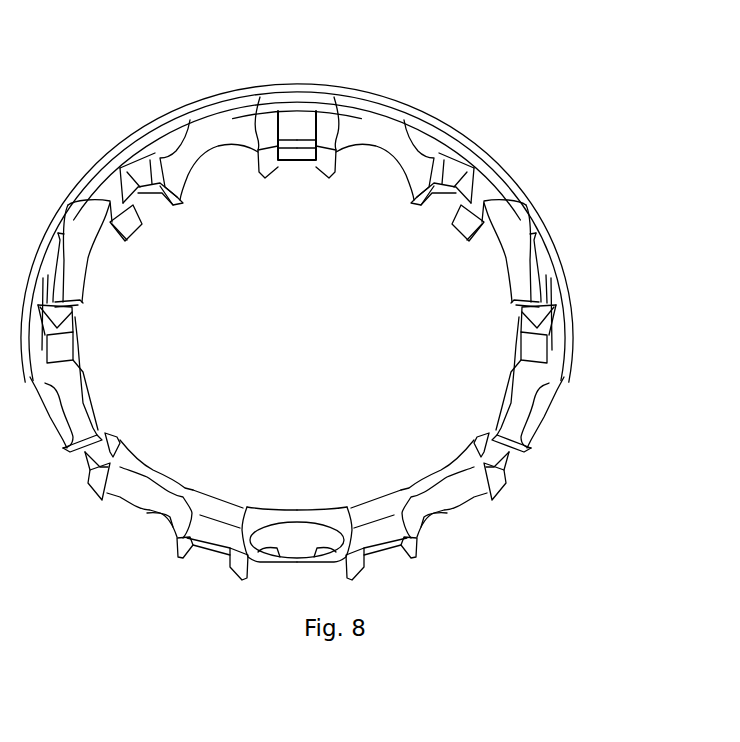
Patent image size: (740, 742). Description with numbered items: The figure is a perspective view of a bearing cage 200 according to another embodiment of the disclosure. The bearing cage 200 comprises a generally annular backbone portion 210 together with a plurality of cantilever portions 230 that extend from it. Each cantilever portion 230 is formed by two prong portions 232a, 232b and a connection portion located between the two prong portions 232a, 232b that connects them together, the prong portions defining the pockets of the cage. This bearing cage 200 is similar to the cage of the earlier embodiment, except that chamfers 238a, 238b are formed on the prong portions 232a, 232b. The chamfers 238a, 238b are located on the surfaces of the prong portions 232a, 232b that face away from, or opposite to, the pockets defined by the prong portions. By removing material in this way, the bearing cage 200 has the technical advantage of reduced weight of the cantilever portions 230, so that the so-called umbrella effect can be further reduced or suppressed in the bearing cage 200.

The bearing cage 200 is at (487, 100).
The backbone portion 210 is at (556, 290).
The cantilever portion 230 is at (305, 189).
The prong portion 232a is at (262, 115).
The prong portion 232b is at (331, 118).
The chamfer 238a is at (272, 122).
The chamfer 238b is at (316, 116).